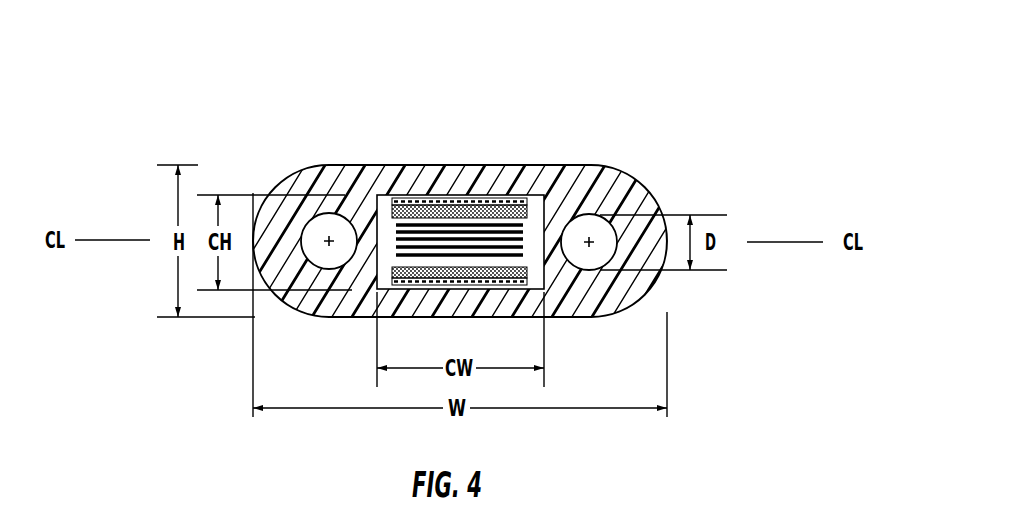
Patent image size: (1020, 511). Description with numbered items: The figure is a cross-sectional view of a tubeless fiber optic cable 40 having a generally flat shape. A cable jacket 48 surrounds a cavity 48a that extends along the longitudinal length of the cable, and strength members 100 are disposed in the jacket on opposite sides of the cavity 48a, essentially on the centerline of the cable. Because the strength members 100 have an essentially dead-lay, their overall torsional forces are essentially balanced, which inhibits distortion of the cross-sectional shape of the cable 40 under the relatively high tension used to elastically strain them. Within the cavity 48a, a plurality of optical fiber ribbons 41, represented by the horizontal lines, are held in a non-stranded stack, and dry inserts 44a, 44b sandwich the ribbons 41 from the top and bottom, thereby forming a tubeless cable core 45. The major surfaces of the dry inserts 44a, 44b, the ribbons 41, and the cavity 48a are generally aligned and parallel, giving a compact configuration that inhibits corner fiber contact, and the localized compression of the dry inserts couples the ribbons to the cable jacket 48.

The tubeless fiber optic cable 40 is at (226, 160).
The optical fiber ribbons 41 is at (499, 256).
The dry insert 44a is at (528, 212).
The dry insert 44b is at (527, 202).
The tubeless cable core 45 is at (557, 172).
The cable jacket 48 is at (654, 283).
The cavity 48a is at (374, 264).
The strength members 100 is at (351, 219).